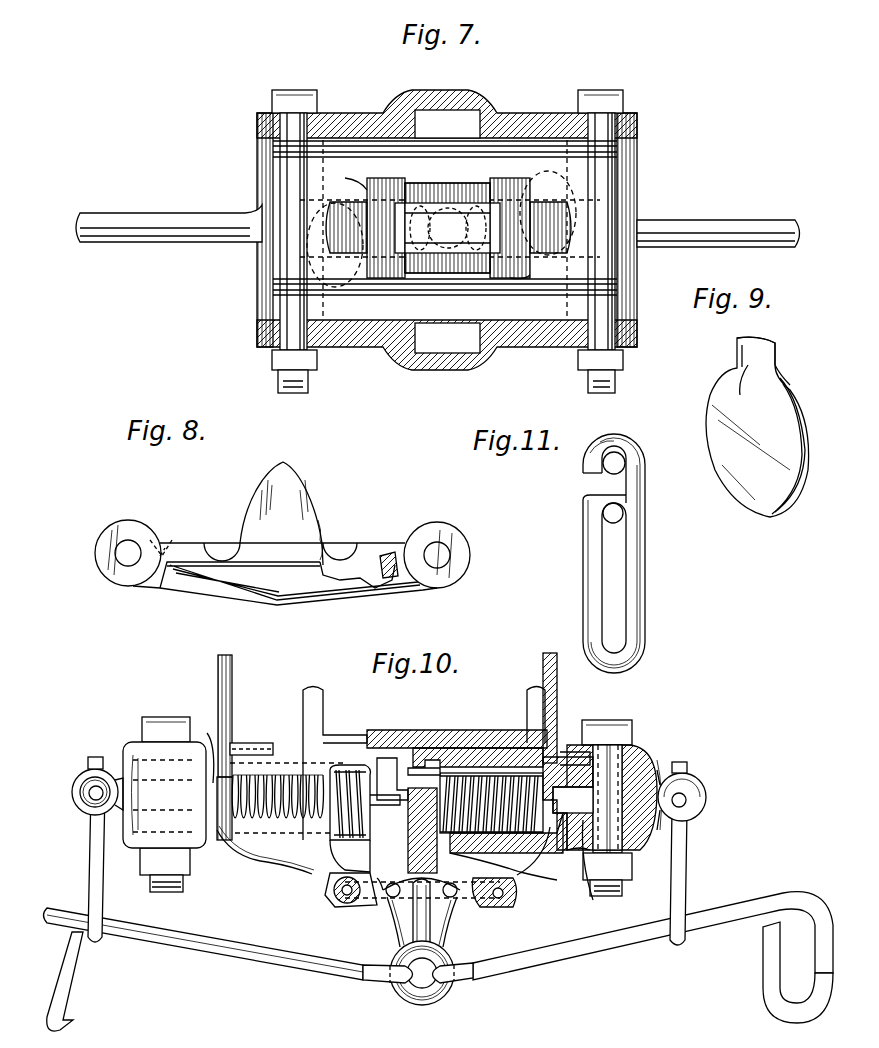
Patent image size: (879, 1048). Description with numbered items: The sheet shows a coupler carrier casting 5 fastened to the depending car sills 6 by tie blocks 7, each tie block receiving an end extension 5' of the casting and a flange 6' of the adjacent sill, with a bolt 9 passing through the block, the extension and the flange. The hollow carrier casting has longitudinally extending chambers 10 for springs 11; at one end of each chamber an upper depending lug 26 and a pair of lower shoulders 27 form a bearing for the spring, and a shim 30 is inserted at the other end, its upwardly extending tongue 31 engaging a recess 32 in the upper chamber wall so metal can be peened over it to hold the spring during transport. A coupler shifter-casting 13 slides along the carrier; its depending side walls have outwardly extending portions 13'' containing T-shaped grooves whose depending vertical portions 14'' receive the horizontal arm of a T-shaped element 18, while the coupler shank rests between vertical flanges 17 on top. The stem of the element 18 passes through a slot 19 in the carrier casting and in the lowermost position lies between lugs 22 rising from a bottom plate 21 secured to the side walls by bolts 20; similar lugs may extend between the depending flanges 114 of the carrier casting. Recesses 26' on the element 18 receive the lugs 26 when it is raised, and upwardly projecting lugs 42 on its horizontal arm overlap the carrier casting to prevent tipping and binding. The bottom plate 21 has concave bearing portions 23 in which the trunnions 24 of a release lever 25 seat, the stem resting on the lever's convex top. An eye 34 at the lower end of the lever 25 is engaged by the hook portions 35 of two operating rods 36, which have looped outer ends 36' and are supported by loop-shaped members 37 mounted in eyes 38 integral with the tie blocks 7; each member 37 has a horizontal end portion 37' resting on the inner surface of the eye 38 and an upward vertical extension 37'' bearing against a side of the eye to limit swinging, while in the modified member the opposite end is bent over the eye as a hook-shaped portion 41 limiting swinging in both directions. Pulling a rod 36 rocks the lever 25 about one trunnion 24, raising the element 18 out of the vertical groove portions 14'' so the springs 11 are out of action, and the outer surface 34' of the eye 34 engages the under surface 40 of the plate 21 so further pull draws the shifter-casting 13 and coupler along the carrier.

In FIG. 10, the coupler carrier casting 5 is at (281, 771).
In FIG. 10, the end extension 5' is at (615, 860).
In FIG. 10, the car sill 6 is at (387, 715).
In FIG. 10, the sill flange 6' is at (446, 762).
In FIG. 10, the tie block 7 is at (133, 750).
In FIG. 10, the bolt 9 is at (168, 720).
In FIG. 10, the spring chamber 10 is at (348, 767).
In FIG. 10, the spring 11 is at (330, 820).
In FIG. 7, the coupler shifter-casting 13 is at (447, 228).
In FIG. 10, the coupler shifter-casting 13 is at (405, 743).
In FIG. 7, the outwardly extending portion 13'' is at (457, 229).
In FIG. 7, the vertical groove portion 14'' is at (460, 233).
In FIG. 10, the vertical flange 17 is at (313, 690).
In FIG. 10, the T-shaped element 18 is at (410, 850).
In FIG. 10, the slot 19 is at (340, 850).
In FIG. 7, the bolt 20 is at (287, 150).
In FIG. 10, the bolt 20 is at (333, 903).
In FIG. 7, the bottom plate 21 is at (528, 318).
In FIG. 8, the bottom plate 21 is at (206, 593).
In FIG. 10, the bottom plate 21 is at (395, 905).
In FIG. 7, the lug 22 is at (453, 207).
In FIG. 8, the lug 22 is at (290, 492).
In FIG. 10, the lug 22 is at (427, 879).
In FIG. 7, the concave bearing portion 23 is at (367, 183).
In FIG. 8, the concave bearing portion 23 is at (214, 553).
In FIG. 7, the trunnion 24 is at (370, 230).
In FIG. 10, the trunnion 24 is at (393, 895).
In FIG. 7, the release lever 25 is at (433, 247).
In FIG. 10, the release lever 25 is at (437, 935).
In FIG. 10, the depending lug 26 is at (399, 757).
In FIG. 10, the recess 26' is at (458, 765).
In FIG. 10, the lower shoulder 27 is at (385, 807).
In FIG. 9, the shim 30 is at (757, 427).
In FIG. 10, the shim 30 is at (223, 853).
In FIG. 9, the tongue 31 is at (757, 364).
In FIG. 10, the tongue 31 is at (580, 750).
In FIG. 10, the recess 32 is at (547, 755).
In FIG. 10, the eye 34 is at (422, 991).
In FIG. 10, the outer surface of eye 34' is at (461, 927).
In FIG. 7, the hook portion 35 is at (550, 170).
In FIG. 10, the hook portion 35 is at (381, 983).
In FIG. 7, the operating rod 36 is at (438, 218).
In FIG. 10, the operating rod 36 is at (439, 936).
In FIG. 10, the looped outer end 36' is at (440, 976).
In FIG. 11, the loop-shaped supporting member 37 is at (631, 553).
In FIG. 10, the loop-shaped supporting member 37 is at (416, 867).
In FIG. 11, the horizontal end portion 37' is at (585, 477).
In FIG. 10, the horizontal end portion 37' is at (403, 835).
In FIG. 10, the vertical extension 37'' is at (395, 748).
In FIG. 11, the eye 38 is at (618, 522).
In FIG. 10, the eye 38 is at (80, 807).
In FIG. 8, the under surface 40 is at (157, 597).
In FIG. 11, the hook-shaped portion 41 is at (627, 440).
In FIG. 10, the lug 42 is at (423, 768).
In FIG. 10, the depending flange 114 is at (487, 860).